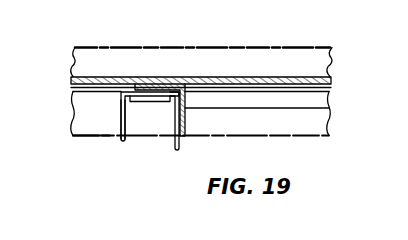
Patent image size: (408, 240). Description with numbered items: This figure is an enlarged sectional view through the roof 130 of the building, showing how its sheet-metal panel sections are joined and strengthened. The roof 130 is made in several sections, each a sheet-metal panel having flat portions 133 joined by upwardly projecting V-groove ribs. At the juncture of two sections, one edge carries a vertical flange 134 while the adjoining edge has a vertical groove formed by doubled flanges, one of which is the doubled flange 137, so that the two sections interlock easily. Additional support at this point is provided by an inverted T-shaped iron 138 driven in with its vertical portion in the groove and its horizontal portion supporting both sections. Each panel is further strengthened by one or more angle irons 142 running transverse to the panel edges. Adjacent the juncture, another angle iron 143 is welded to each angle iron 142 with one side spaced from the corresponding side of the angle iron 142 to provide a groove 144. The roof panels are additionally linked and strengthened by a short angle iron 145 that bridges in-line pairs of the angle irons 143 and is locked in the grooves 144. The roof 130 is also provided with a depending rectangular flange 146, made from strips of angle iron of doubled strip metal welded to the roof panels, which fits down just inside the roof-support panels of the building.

The roof 130 is at (281, 43).
The flat portion 133 is at (108, 74).
The vertical flange 134 is at (281, 77).
The doubled flange 137 is at (262, 52).
The inverted T-shaped iron 138 is at (267, 88).
The angle iron 142 is at (190, 122).
The angle iron 143 is at (148, 102).
The groove 144 is at (190, 97).
The short angle iron 145 is at (120, 127).
The depending rectangular flange 146 is at (78, 136).